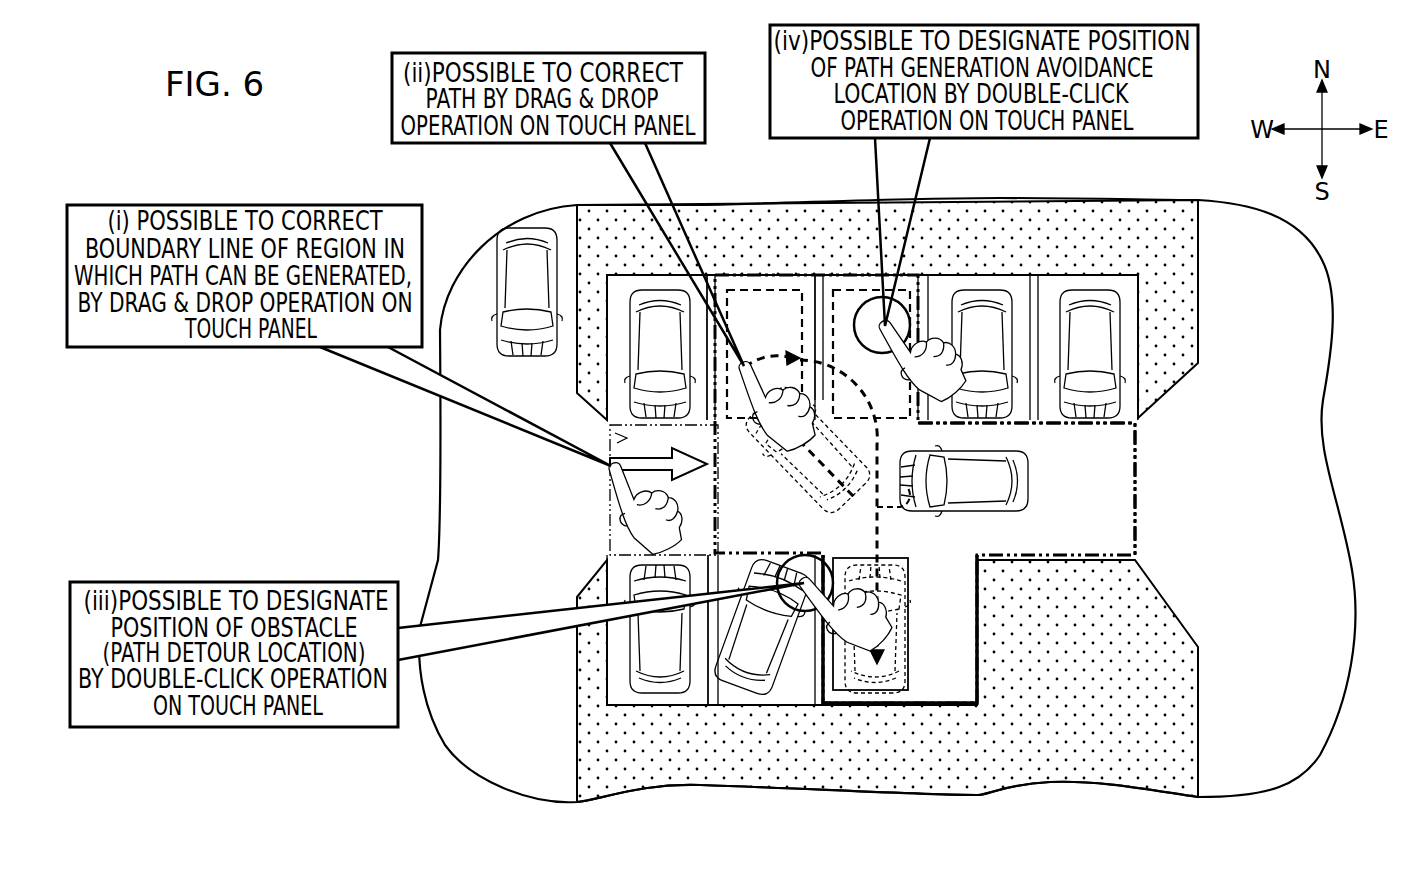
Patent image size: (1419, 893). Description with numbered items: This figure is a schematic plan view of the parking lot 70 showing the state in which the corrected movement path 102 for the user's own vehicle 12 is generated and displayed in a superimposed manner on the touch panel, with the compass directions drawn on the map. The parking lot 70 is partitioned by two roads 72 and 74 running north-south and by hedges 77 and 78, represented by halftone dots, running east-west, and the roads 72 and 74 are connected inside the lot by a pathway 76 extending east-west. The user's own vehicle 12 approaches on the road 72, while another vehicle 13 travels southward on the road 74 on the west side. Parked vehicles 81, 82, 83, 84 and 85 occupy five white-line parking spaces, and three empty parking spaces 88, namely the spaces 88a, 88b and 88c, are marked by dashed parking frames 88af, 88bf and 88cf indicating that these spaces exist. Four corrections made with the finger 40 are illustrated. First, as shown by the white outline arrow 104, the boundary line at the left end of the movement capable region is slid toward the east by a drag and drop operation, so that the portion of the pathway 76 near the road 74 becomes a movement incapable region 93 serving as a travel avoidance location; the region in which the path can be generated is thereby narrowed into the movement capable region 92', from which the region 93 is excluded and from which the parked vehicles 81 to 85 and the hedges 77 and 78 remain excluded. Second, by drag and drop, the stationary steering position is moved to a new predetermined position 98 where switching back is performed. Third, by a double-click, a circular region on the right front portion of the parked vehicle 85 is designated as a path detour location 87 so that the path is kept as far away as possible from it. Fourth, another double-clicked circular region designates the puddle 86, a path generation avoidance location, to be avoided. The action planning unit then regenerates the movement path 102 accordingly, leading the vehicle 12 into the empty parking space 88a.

The vehicle 12 is at (1055, 515).
The another vehicle 13 is at (528, 222).
The pointing unit 40 is at (612, 485).
The parking lot 70 is at (1179, 178).
The road 72 is at (1292, 752).
The road 74 is at (488, 513).
The pathway 76 is at (722, 452).
The hedge 77 is at (1031, 265).
The hedge 78 is at (995, 758).
The parked vehicle 81 is at (635, 368).
The parked vehicle 82 is at (978, 310).
The parked vehicle 83 is at (1087, 310).
The parked vehicle 84 is at (652, 692).
The parked vehicle 85 is at (773, 692).
The puddle 86 is at (875, 340).
The path detour location 87 is at (800, 560).
The parking spaces 88 is at (757, 138).
The parking space 88a is at (872, 692).
The parking frame 88af is at (892, 692).
The parking space 88b is at (763, 315).
The parking frame 88bf is at (740, 288).
The parking space 88c is at (848, 302).
The parking frame 88cf is at (836, 290).
The movement capable region 92' is at (1026, 489).
The movement incapable region 93 is at (610, 432).
The predetermined position 98 is at (747, 363).
The movement path 102 is at (885, 540).
The white outline arrow 104 is at (688, 478).